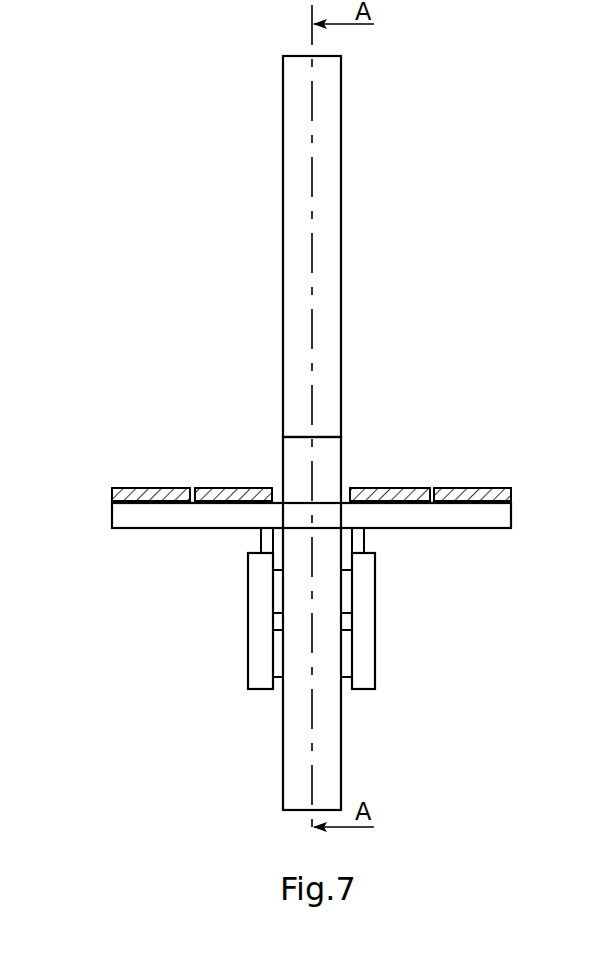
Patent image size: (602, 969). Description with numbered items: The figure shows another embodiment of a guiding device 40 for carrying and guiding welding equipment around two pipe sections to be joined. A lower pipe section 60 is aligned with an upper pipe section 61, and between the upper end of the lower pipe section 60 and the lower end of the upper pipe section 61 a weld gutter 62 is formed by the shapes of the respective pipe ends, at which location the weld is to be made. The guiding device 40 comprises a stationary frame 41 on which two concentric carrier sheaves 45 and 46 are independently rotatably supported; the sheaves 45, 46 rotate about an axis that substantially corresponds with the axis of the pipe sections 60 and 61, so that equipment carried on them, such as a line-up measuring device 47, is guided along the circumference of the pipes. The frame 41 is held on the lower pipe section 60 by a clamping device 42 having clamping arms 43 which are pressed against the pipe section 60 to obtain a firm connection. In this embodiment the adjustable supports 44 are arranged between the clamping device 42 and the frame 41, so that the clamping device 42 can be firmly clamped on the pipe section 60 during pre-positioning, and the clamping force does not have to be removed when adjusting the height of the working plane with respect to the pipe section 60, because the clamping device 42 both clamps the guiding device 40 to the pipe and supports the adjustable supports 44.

The guiding device 40 is at (481, 424).
The frame 41 is at (146, 526).
The clamping device 42 is at (373, 648).
The clamping arms 43 is at (345, 648).
The adjustable supports 44 is at (257, 538).
The carrier sheave 45 is at (218, 487).
The carrier sheave 46 is at (150, 487).
The line-up measuring device 47 is at (361, 542).
The lower pipe section 60 is at (282, 770).
The upper pipe section 61 is at (281, 254).
The weld gutter 62 is at (319, 435).